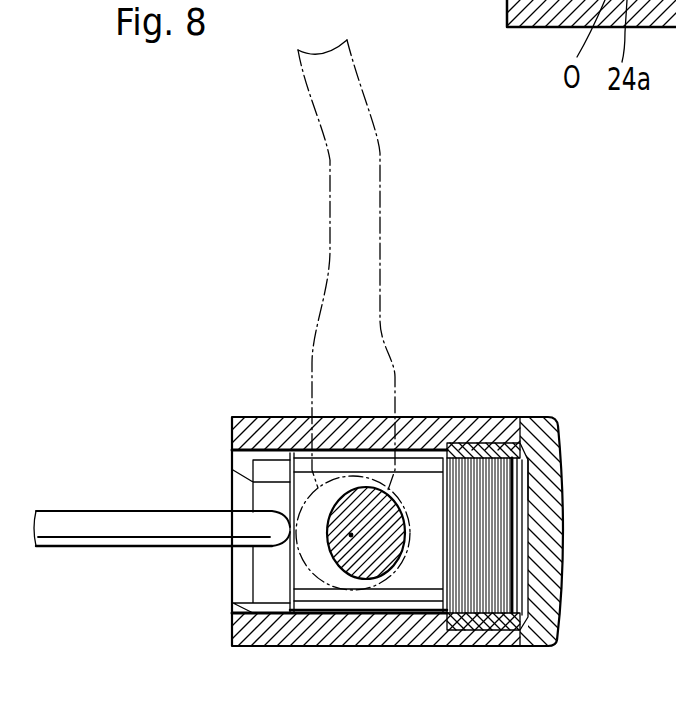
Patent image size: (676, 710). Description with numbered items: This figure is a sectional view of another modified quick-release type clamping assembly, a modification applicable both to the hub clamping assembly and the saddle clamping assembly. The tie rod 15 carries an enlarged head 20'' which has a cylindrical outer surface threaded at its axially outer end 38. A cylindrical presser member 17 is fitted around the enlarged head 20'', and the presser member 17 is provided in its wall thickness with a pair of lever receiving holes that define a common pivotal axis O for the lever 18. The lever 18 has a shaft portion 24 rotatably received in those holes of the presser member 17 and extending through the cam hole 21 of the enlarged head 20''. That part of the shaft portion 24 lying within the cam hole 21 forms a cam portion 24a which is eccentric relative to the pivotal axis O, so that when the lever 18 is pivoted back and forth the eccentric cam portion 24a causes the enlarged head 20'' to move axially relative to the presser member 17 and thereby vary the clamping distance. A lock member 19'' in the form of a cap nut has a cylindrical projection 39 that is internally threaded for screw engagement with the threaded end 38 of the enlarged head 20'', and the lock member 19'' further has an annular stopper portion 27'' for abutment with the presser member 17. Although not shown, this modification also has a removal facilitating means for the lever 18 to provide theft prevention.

The lever 18 is at (383, 263).
The shaft portion 24 is at (323, 482).
The cam portion 24a is at (340, 556).
The pivotal axis O is at (351, 537).
The cam hole 21 is at (382, 485).
The presser member 17 is at (474, 430).
The annular stopper portion 27'' is at (533, 486).
The axially outer end 38 is at (487, 495).
The cylindrical projection 39 is at (558, 438).
The lock member 19'' is at (574, 531).
The tie rod 15 is at (113, 508).
The enlarged head 20'' is at (376, 557).